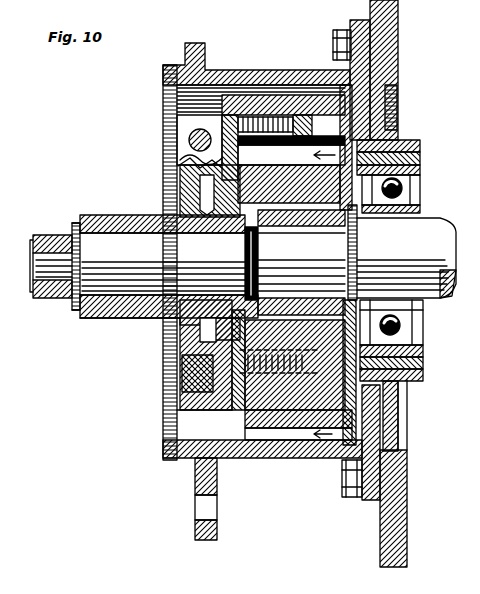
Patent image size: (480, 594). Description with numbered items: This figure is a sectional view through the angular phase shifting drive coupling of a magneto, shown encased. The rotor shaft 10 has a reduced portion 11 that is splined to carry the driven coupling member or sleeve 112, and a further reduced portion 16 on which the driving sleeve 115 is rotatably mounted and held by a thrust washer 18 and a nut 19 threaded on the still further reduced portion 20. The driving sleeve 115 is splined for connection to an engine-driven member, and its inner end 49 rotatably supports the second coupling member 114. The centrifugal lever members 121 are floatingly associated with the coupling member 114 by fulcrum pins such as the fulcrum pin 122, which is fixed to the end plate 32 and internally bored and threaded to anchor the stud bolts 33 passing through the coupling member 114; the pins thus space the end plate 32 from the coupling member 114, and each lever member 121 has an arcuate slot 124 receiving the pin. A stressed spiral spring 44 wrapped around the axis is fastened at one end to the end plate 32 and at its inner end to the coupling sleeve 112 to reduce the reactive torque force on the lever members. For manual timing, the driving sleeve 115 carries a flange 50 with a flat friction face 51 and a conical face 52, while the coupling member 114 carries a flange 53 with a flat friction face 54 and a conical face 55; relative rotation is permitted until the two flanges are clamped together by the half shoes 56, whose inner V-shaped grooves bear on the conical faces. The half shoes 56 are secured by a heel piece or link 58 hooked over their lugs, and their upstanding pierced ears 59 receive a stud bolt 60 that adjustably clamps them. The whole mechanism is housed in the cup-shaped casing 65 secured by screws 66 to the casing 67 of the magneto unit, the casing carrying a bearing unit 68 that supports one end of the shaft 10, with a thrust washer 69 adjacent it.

The shaft 10 is at (442, 222).
The reduced portion of shaft 11 is at (312, 266).
The reduced portion of shaft 16 is at (133, 294).
The thrust washer 18 is at (71, 224).
The nut 19 is at (63, 300).
The further reduced portion of shaft 20 is at (28, 286).
The end plate 32 is at (373, 144).
The stud bolts 33 is at (304, 118).
The spiral spring 44 is at (400, 186).
The inner end of driving sleeve 49 is at (238, 282).
The flange 50 is at (196, 196).
The friction face 51 is at (188, 162).
The conical face 52 is at (184, 165).
The flange 53 is at (177, 224).
The friction face 54 is at (183, 360).
The conical face 55 is at (183, 398).
The half shoes 56 is at (176, 415).
The heel piece or link 58 is at (171, 438).
The pierced ears 59 is at (185, 122).
The stud bolt 60 is at (193, 137).
The casing 65 is at (165, 77).
The screws 66 is at (345, 32).
The casing of magneto unit 67 is at (386, 22).
The bearing unit 68 is at (425, 340).
The thrust washer 69 is at (353, 220).
The coupling member or sleeve 112 is at (301, 262).
The coupling member 114 is at (246, 100).
The driving sleeve 115 is at (97, 318).
The centrifugal lever members 121 is at (250, 104).
The fulcrum pin 122 is at (372, 117).
The arcuate slot 124 is at (332, 124).